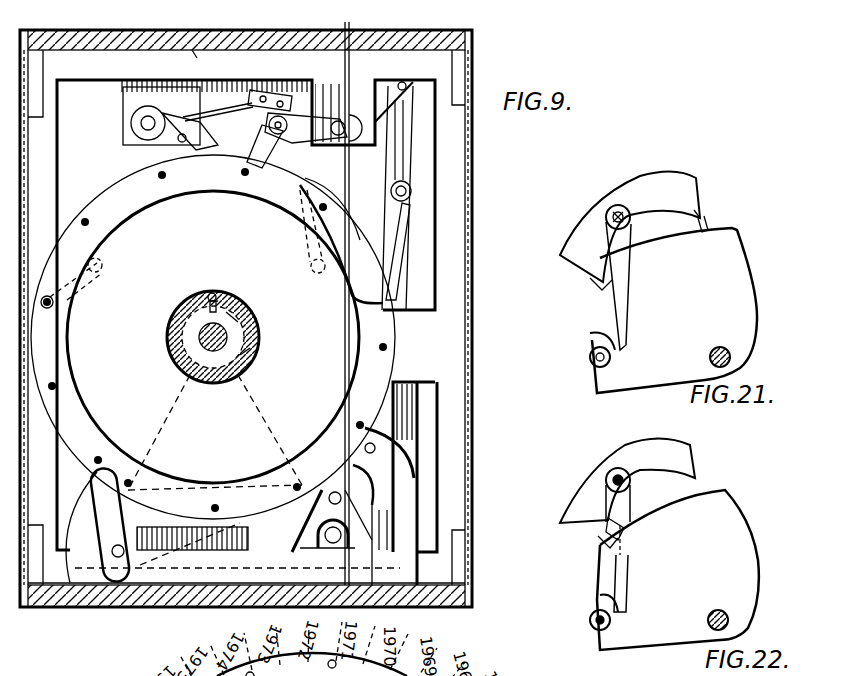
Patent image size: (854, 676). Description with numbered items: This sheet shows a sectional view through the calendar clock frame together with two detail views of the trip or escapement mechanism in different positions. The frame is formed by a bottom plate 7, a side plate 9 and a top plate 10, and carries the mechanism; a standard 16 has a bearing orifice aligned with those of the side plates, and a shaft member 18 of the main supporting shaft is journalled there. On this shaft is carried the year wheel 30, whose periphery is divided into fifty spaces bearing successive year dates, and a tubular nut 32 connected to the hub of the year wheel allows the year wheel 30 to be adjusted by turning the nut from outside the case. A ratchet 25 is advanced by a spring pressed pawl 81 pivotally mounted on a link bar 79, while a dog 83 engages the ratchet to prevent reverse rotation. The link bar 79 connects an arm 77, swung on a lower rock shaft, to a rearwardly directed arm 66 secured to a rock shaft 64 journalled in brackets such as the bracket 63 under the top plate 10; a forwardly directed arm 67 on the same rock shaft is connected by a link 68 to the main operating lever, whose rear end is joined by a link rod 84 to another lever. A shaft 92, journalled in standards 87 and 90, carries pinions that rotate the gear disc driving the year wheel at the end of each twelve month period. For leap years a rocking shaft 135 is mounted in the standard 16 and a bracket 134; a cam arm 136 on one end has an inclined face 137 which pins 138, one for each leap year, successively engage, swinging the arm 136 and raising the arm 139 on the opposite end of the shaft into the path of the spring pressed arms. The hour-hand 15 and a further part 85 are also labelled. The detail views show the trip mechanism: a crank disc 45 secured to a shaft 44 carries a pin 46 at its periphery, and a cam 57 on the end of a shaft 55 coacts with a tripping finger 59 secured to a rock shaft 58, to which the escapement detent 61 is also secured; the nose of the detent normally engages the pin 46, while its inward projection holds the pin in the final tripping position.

In FIG. 9, the bottom plate 7 is at (452, 606).
In FIG. 9, the side plate 9 is at (452, 480).
In FIG. 9, the top plate 10 is at (204, 61).
In FIG. 9, the hour-hand 15 is at (333, 542).
In FIG. 9, the standard 16 is at (303, 512).
In FIG. 9, the shaft member 18 is at (257, 335).
In FIG. 9, the ratchet wheel 25 is at (380, 278).
In FIG. 9, the year wheel 30 is at (393, 338).
In FIG. 9, the tubular nut 32 is at (262, 322).
In FIG. 21, the shaft 44 is at (731, 360).
In FIG. 22, the shaft 44 is at (730, 618).
In FIG. 21, the crank disc 45 is at (735, 290).
In FIG. 22, the crank disc 45 is at (748, 572).
In FIG. 21, the pin 46 is at (723, 215).
In FIG. 22, the pin 46 is at (628, 535).
In FIG. 21, the shaft 55 is at (593, 366).
In FIG. 22, the shaft 55 is at (590, 628).
In FIG. 21, the cam 57 is at (588, 340).
In FIG. 22, the cam 57 is at (598, 602).
In FIG. 21, the rock shaft 58 is at (620, 215).
In FIG. 22, the rock shaft 58 is at (619, 478).
In FIG. 21, the tripping finger 59 is at (622, 296).
In FIG. 22, the tripping finger 59 is at (630, 580).
In FIG. 21, the escapement detent 61 is at (604, 195).
In FIG. 22, the escapement detent 61 is at (590, 472).
In FIG. 9, the bracket 63 is at (220, 102).
In FIG. 9, the rock shaft 64 is at (338, 121).
In FIG. 9, the rearwardly directed arm 66 is at (383, 92).
In FIG. 9, the forwardly directed arm 67 is at (303, 150).
In FIG. 9, the link 68 is at (263, 153).
In FIG. 9, the arm 77 is at (340, 462).
In FIG. 9, the link bar 79 is at (403, 162).
In FIG. 9, the spring pressed pawl 81 is at (413, 210).
In FIG. 9, the dog 83 is at (135, 100).
In FIG. 9, the link rod 84 is at (346, 62).
In FIG. 9, the post 85 is at (382, 545).
In FIG. 9, the standard 87 is at (353, 492).
In FIG. 9, the standard 90 is at (393, 577).
In FIG. 9, the shaft 92 is at (372, 450).
In FIG. 9, the bracket 134 is at (117, 556).
In FIG. 9, the rocking shaft 135 is at (62, 606).
In FIG. 9, the cam arm 136 is at (115, 522).
In FIG. 9, the inclined face 137 is at (95, 478).
In FIG. 9, the pins 138 is at (55, 303).
In FIG. 9, the arm 139 is at (207, 540).